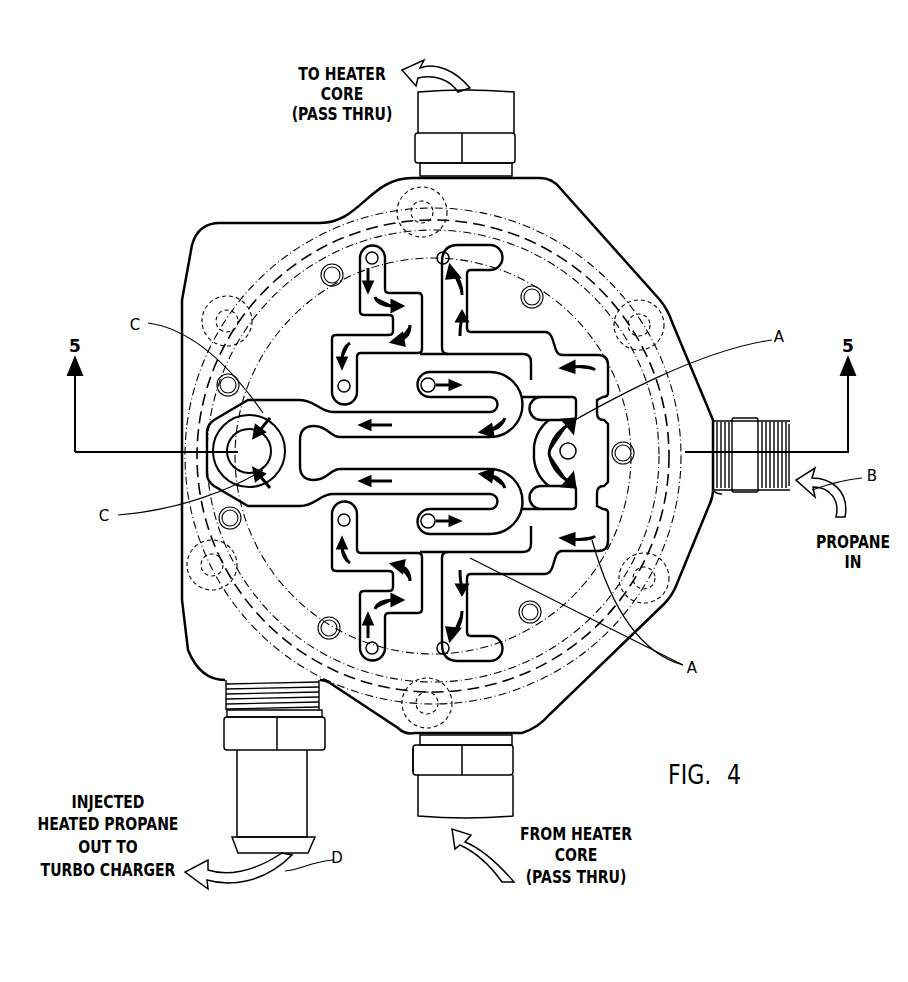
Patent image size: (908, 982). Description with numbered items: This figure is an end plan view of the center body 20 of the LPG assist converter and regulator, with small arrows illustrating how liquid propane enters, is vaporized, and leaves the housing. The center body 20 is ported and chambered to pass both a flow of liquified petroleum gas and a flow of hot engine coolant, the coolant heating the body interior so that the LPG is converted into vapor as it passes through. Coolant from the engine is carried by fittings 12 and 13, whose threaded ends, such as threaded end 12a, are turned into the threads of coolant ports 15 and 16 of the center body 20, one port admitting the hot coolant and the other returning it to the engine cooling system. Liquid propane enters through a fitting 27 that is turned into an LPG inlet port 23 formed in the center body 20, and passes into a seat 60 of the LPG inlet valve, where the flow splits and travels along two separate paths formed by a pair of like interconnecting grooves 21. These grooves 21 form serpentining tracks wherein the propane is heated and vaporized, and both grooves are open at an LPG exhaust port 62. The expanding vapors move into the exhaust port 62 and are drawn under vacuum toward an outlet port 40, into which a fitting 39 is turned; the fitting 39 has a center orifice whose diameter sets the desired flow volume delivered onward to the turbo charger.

The fitting 12 is at (513, 770).
The threaded end 12a is at (417, 750).
The fitting 13 is at (497, 108).
The coolant port 15 is at (520, 735).
The coolant port 16 is at (515, 170).
The center body 20 is at (590, 252).
The interconnecting grooves 21 is at (605, 372).
The LPG inlet port 23 is at (720, 494).
The fitting 27 is at (745, 419).
The fitting 39 is at (247, 787).
The outlet port 40 is at (225, 683).
The seat 60 is at (713, 497).
The LPG exhaust port 62 is at (245, 452).